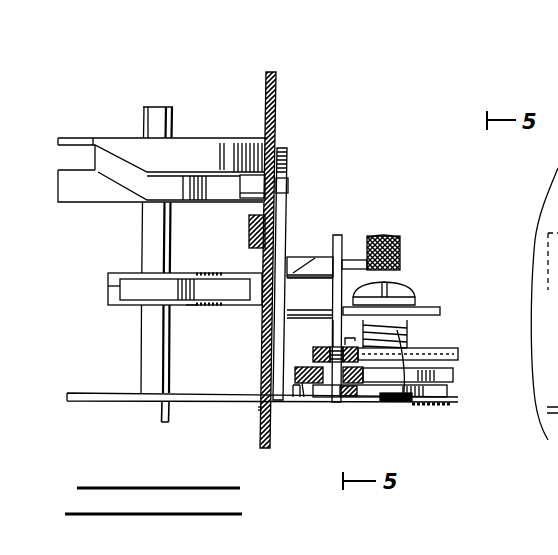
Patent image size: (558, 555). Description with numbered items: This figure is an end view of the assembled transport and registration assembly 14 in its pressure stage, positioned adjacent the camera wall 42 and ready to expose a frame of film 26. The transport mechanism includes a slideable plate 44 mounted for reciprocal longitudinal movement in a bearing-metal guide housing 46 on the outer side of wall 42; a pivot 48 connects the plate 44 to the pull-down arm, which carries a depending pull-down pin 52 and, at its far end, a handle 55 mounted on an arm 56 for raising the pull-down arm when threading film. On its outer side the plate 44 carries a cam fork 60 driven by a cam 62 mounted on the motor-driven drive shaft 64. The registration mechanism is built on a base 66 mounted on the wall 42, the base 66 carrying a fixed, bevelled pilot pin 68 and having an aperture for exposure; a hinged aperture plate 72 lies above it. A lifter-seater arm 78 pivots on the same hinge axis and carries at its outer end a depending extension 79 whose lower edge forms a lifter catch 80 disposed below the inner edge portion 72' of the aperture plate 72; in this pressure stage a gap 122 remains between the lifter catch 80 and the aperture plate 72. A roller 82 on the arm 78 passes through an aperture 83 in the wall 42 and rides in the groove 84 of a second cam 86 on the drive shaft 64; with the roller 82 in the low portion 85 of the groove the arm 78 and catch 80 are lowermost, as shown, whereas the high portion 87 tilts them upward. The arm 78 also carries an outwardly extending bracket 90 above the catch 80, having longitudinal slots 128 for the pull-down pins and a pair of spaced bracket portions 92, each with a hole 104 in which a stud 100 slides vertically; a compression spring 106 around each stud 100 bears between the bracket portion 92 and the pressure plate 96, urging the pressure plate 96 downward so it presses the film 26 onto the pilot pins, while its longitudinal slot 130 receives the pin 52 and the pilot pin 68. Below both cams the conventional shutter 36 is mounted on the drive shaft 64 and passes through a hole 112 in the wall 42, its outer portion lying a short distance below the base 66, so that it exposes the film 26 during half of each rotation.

The assembly 14 is at (353, 149).
The film 26 is at (541, 343).
The shutter 36 is at (93, 393).
The camera wall 42 is at (277, 103).
The slideable plate 44 is at (250, 250).
The guide member or housing 46 is at (185, 277).
The pivot 48 is at (352, 243).
The pull-down pin 52 is at (331, 332).
The handle 55 is at (401, 244).
The arm 56 is at (381, 238).
The cam fork 60 is at (192, 306).
The cam 62 is at (114, 315).
The drive shaft 64 is at (173, 111).
The base 66 is at (386, 405).
The pilot pin 68 is at (359, 405).
The aperture plate 72 is at (440, 399).
The inner edge portion of aperture plate 72' is at (333, 426).
The lifter-seater arm 78 is at (298, 158).
The depending extension 79 is at (262, 371).
The lifter catch 80 is at (259, 408).
The roller 82 is at (244, 178).
The aperture 83 is at (288, 186).
The groove 84 is at (128, 184).
The low portion of groove 85 is at (190, 188).
The cam 86 is at (77, 186).
The high portion of groove 87 is at (88, 140).
The bracket 90 is at (309, 274).
The bracket portions 92 is at (441, 308).
The pressure plate 96 is at (458, 358).
The stud 100 is at (401, 292).
The hole 104 is at (404, 336).
The compression spring 106 is at (405, 412).
The hole 112 is at (258, 411).
The gap 122 is at (294, 407).
The longitudinal slots 128 is at (333, 311).
The longitudinal slot 130 is at (315, 353).